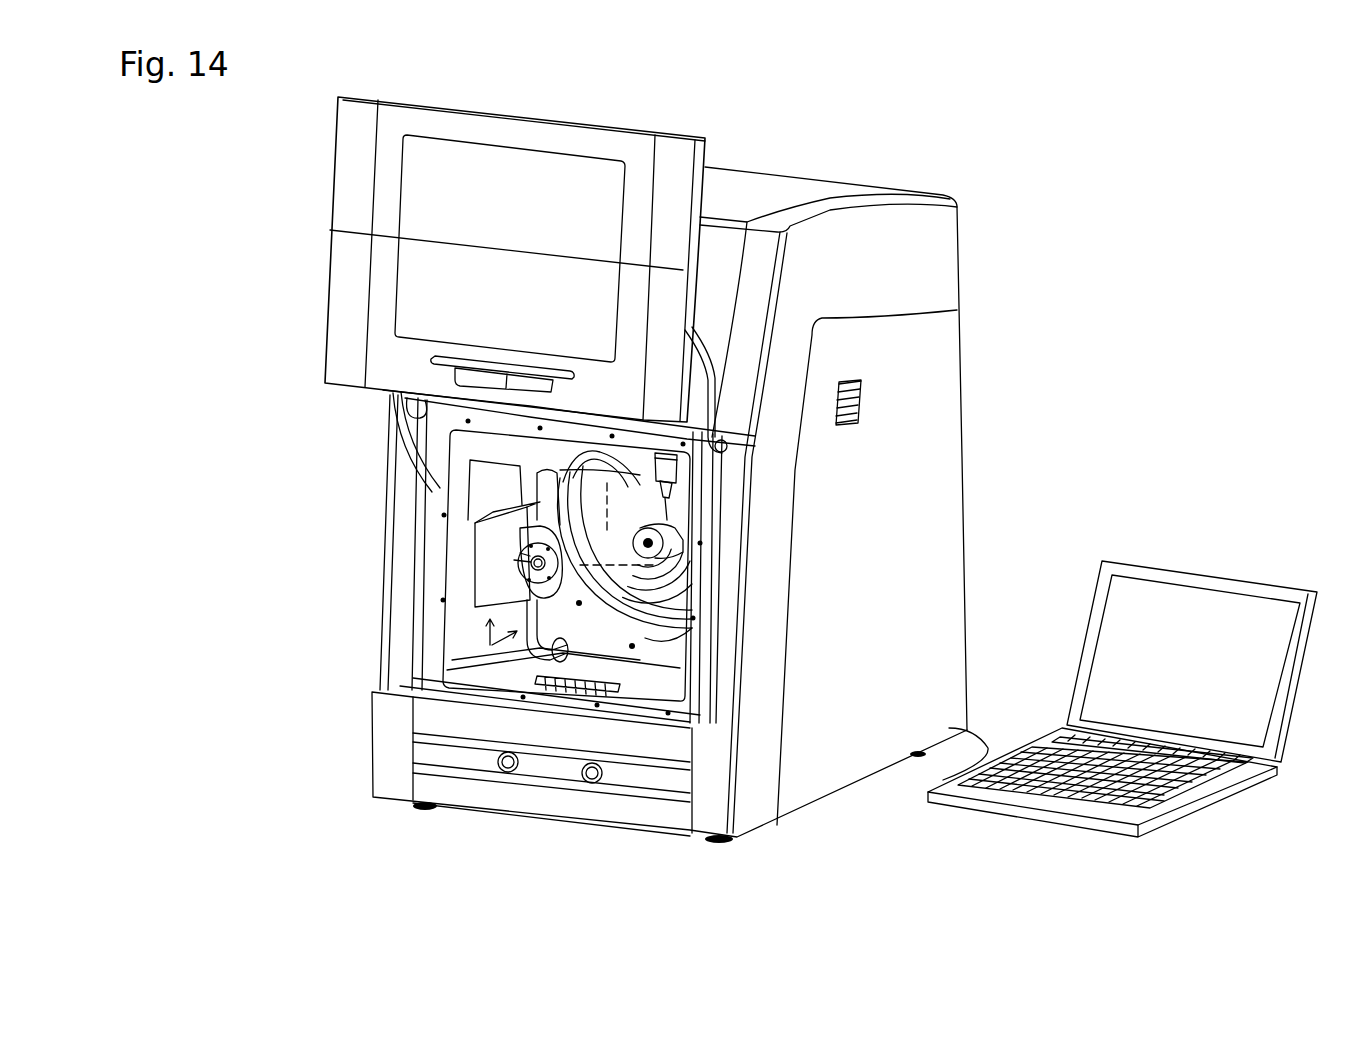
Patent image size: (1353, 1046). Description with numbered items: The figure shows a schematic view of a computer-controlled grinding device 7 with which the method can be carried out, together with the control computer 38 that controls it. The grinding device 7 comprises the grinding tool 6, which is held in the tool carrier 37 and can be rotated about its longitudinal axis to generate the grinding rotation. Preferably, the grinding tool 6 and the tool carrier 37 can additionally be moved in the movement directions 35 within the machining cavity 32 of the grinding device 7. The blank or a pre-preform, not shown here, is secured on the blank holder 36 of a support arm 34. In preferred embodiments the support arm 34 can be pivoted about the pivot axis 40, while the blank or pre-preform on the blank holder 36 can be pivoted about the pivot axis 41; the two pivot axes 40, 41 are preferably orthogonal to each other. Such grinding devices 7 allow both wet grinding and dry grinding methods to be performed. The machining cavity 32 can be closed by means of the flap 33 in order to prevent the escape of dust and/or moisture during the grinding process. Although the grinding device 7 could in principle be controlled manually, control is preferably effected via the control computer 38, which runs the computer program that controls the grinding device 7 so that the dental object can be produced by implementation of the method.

The grinding device 7 is at (997, 337).
The flap 33 is at (678, 167).
The support arm 34 is at (513, 458).
The grinding tool 6 is at (440, 510).
The blank holder 36 is at (535, 565).
The tool carrier 37 is at (663, 542).
The pivot axis 40 is at (607, 520).
The pivot axis 41 is at (620, 567).
The movement directions 35 is at (513, 633).
The machining cavity 32 is at (645, 638).
The control computer 38 is at (1177, 565).